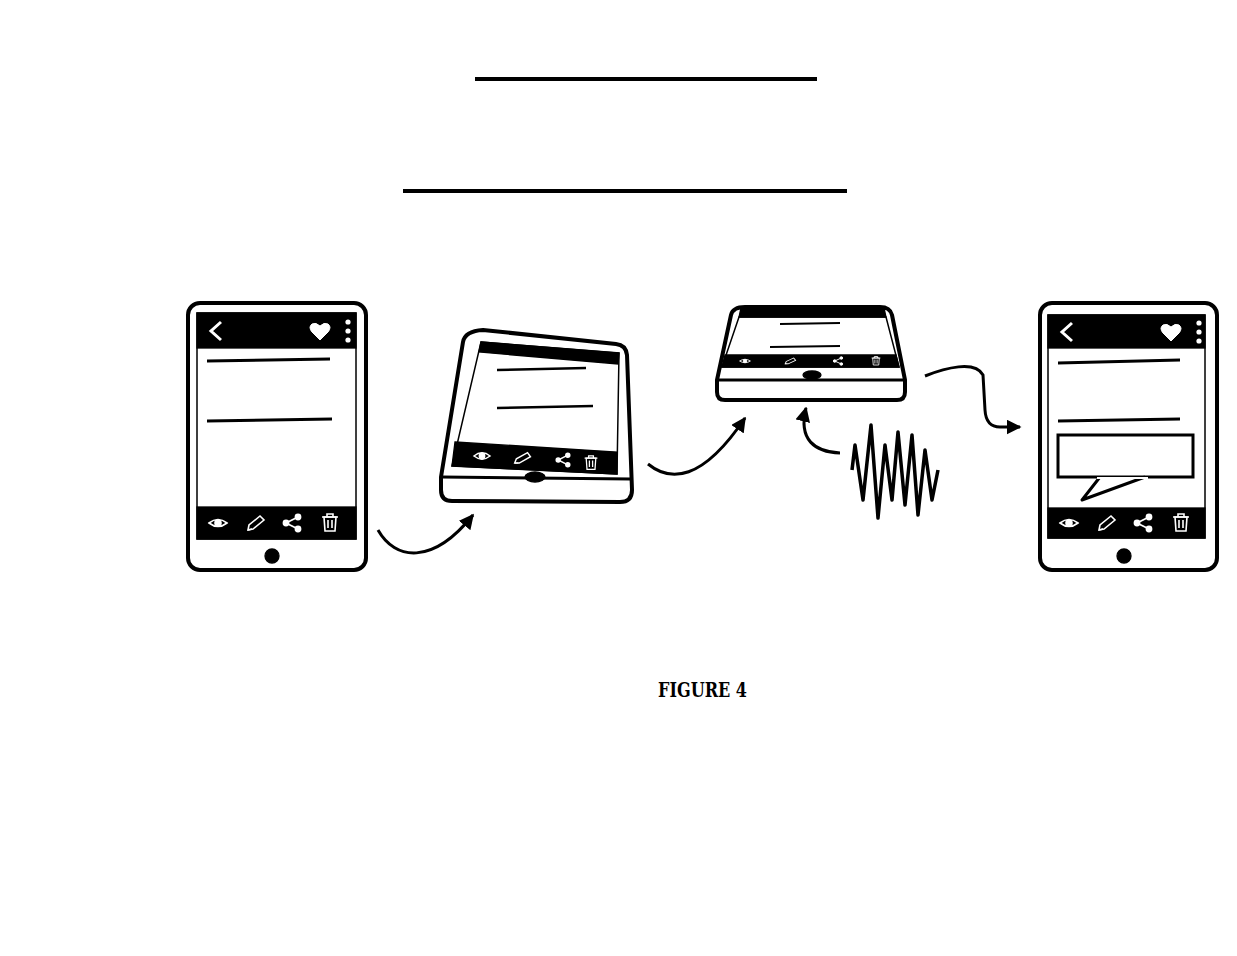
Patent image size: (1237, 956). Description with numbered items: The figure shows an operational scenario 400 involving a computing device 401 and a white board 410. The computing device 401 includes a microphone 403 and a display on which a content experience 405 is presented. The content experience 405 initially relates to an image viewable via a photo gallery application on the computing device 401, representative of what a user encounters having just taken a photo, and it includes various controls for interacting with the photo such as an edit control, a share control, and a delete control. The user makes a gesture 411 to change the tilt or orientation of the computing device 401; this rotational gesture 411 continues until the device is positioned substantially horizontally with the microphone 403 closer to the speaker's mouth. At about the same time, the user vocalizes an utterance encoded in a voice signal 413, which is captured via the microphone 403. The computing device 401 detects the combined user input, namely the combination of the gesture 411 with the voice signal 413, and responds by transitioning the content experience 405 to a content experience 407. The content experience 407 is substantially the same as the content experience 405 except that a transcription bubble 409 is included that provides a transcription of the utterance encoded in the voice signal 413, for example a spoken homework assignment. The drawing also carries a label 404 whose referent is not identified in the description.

The operational scenario 400 is at (254, 77).
The computing device 401 is at (702, 449).
The microphone 403 is at (728, 572).
The user 404 is at (362, 627).
The content experience 405 is at (548, 407).
The content experience 407 is at (1126, 390).
The transcription bubble 409 is at (1129, 470).
The white board 410 is at (625, 135).
The gesture 411 is at (699, 471).
The voice signal 413 is at (871, 486).